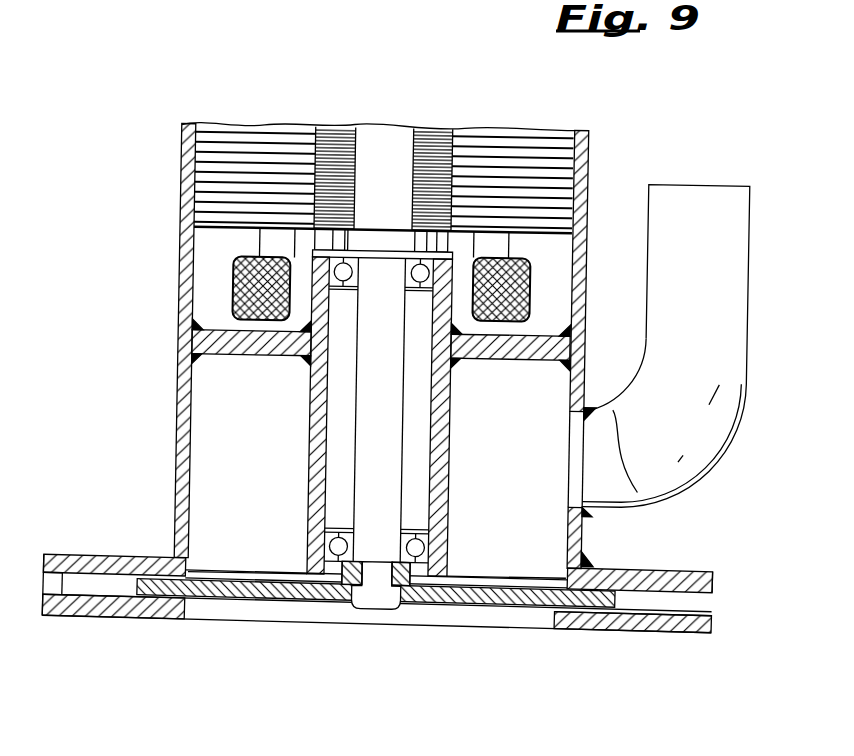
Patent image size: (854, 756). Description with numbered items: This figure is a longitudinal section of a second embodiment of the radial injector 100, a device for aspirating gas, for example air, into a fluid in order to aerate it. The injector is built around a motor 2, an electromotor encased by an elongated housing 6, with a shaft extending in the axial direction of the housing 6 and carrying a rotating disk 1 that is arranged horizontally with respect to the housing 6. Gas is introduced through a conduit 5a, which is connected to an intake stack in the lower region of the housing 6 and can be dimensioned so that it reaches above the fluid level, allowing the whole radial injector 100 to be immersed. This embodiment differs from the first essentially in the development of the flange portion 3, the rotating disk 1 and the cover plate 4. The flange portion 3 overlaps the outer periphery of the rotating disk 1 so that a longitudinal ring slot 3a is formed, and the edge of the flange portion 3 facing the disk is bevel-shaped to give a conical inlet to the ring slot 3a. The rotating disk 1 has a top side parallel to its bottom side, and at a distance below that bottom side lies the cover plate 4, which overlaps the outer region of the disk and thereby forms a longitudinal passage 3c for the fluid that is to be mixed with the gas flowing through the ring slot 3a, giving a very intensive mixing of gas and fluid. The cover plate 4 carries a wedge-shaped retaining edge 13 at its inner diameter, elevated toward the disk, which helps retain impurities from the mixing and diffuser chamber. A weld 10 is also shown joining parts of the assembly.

The rotating disk 1 is at (495, 605).
The motor 2 is at (381, 158).
The flange portion 3 is at (679, 560).
The ring slot 3a is at (608, 574).
The passage 3c is at (592, 602).
The cover plate 4 is at (660, 625).
The conduit 5a is at (745, 311).
The housing 6 is at (186, 460).
The weld 10 is at (583, 546).
The retaining edge 13 is at (563, 600).
The radial injector 100 is at (473, 346).